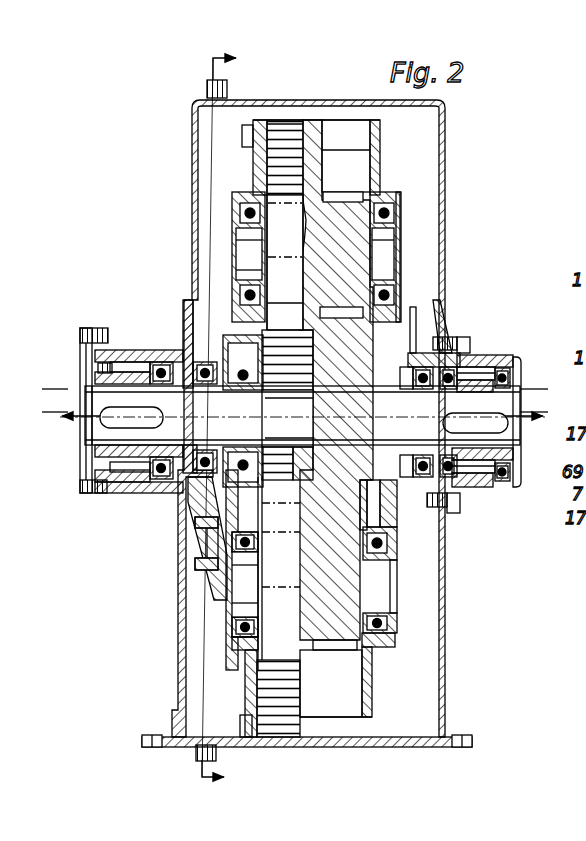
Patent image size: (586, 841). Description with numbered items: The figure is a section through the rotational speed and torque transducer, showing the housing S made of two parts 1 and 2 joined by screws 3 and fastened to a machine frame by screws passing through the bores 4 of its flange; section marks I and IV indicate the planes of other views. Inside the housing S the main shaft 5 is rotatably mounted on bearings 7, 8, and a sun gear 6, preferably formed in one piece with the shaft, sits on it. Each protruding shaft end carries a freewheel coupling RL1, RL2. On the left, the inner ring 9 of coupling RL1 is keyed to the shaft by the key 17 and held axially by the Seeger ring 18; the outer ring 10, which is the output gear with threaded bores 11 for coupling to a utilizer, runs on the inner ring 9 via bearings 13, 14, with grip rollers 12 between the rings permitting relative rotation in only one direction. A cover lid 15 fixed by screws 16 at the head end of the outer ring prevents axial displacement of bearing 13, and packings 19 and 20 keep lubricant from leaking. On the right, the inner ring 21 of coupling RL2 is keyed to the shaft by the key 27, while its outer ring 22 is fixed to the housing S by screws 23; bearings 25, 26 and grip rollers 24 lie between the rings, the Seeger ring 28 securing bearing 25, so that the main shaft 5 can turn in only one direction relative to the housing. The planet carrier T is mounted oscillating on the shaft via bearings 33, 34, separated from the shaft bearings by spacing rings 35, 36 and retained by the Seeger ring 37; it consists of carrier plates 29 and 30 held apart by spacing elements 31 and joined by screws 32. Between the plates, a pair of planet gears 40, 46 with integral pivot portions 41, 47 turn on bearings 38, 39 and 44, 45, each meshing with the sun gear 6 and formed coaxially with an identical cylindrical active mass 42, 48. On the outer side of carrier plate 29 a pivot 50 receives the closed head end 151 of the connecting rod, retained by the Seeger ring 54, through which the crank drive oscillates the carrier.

The housing part 1 is at (192, 118).
The housing part 2 is at (446, 152).
The screws 3 is at (206, 88).
The bores 4 is at (160, 737).
The main shaft 5 is at (488, 426).
The sun gear 6 is at (416, 312).
The bearing 7 is at (216, 358).
The bearing 8 is at (462, 340).
The inner ring 9 is at (131, 484).
The outer ring 10 is at (142, 480).
The threaded bores 11 is at (84, 496).
The grip rollers 12 is at (114, 486).
The bearing 13 is at (110, 349).
The bearing 14 is at (165, 470).
The flange 15 is at (85, 437).
The screws 16 is at (88, 346).
The key 17 is at (152, 419).
The Seeger ring 18 is at (97, 371).
The packing 19 is at (172, 358).
The packing 20 is at (186, 345).
The inner ring 21 is at (523, 388).
The outer ring 22 is at (516, 478).
The screws 23 is at (458, 513).
The grip rollers 24 is at (482, 478).
The bearing 25 is at (500, 352).
The bearing 26 is at (520, 364).
The key 27 is at (514, 448).
The Seeger ring 28 is at (428, 495).
The carrier plate 29 is at (246, 688).
The carrier plate 30 is at (381, 134).
The spacing elements 31 is at (332, 132).
The screws 32 is at (247, 125).
The bearing 33 is at (263, 347).
The bearing 34 is at (424, 337).
The spacing ring 35 is at (224, 390).
The spacing ring 36 is at (410, 367).
The Seeger ring 37 is at (258, 393).
The bearing 38 is at (246, 195).
The bearing 39 is at (392, 192).
The planet gear 40 is at (340, 205).
The pivot portions 41 is at (392, 236).
The active mass 42 is at (288, 125).
The bearing 44 is at (244, 650).
The bearing 45 is at (398, 645).
The planet gear 46 is at (337, 650).
The pivot portions 47 is at (390, 590).
The active mass 48 is at (294, 737).
The pivot 50 is at (196, 528).
The Seeger ring 54 is at (196, 570).
The closed head end 151 is at (215, 598).
The freewheel coupling RL1 is at (133, 342).
The freewheel coupling RL2 is at (506, 350).
The housing S is at (176, 680).
The carrier T is at (392, 690).
The section line I is at (225, 411).
The section line IV is at (295, 402).